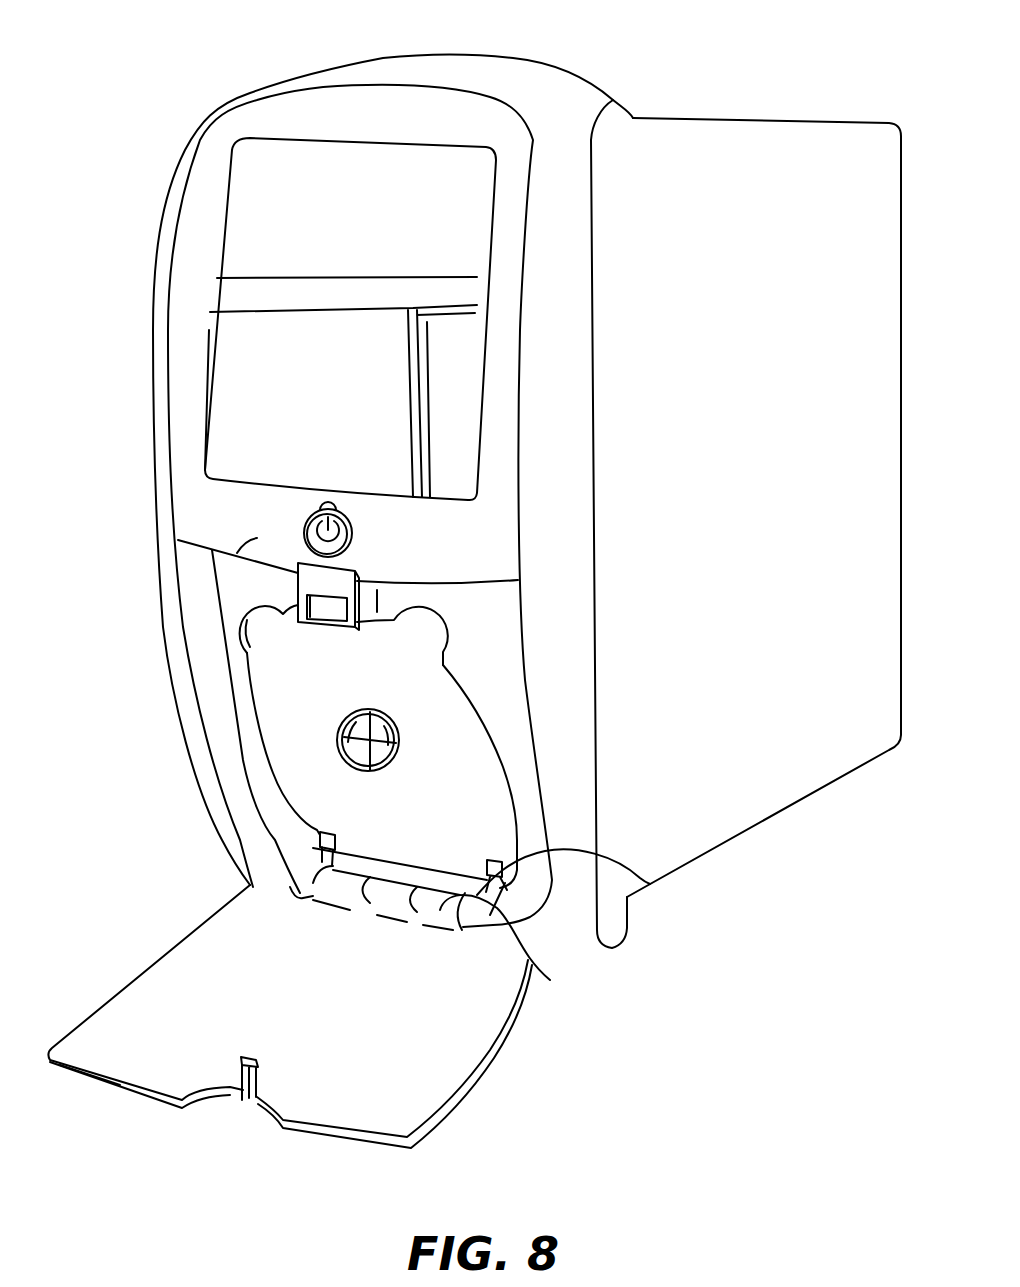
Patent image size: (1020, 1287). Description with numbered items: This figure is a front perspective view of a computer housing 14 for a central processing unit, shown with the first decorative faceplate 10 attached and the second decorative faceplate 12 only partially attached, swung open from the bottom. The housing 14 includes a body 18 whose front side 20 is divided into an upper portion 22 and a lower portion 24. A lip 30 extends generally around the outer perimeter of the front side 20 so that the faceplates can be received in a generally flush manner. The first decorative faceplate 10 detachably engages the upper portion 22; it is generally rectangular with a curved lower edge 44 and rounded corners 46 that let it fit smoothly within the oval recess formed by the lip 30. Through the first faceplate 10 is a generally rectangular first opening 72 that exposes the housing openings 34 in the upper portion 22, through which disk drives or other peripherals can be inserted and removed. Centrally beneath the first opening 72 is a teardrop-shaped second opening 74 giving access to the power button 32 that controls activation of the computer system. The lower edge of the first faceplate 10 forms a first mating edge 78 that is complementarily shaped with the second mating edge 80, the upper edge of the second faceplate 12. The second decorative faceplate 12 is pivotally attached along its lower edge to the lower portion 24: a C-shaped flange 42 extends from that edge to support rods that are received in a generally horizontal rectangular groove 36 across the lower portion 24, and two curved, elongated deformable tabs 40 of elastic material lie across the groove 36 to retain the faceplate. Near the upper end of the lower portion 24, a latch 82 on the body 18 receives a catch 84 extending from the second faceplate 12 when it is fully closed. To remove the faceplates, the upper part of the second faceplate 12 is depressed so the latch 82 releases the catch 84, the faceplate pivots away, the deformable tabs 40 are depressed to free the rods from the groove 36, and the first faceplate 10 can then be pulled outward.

The first decorative faceplate 10 is at (348, 556).
The second decorative faceplate 12 is at (290, 1016).
The housing 14 is at (743, 118).
The body 18 is at (507, 628).
The front side 20 is at (256, 721).
The upper portion 22 is at (343, 294).
The lower portion 24 is at (378, 746).
The lip 30 is at (720, 524).
The power button 32 is at (352, 528).
The housing openings 34 is at (350, 319).
The groove 36 is at (362, 865).
The deformable tabs 40 is at (317, 847).
The flange 42 is at (550, 980).
The curved lower edge 44 is at (380, 585).
The rounded corners 46 is at (233, 132).
The first opening 72 is at (204, 398).
The second opening 74 is at (304, 522).
The first mating edge 78 is at (265, 545).
The second mating edge 80 is at (95, 1083).
The latch 82 is at (337, 612).
The catch 84 is at (240, 1066).